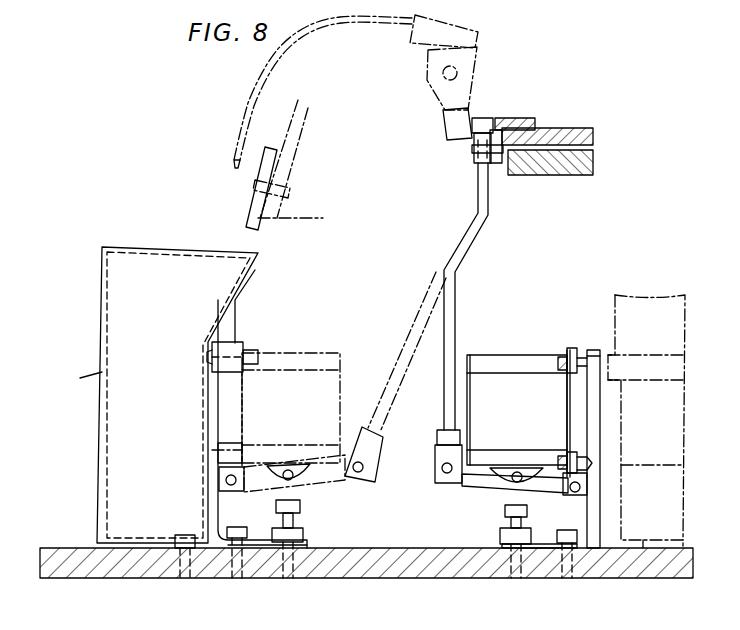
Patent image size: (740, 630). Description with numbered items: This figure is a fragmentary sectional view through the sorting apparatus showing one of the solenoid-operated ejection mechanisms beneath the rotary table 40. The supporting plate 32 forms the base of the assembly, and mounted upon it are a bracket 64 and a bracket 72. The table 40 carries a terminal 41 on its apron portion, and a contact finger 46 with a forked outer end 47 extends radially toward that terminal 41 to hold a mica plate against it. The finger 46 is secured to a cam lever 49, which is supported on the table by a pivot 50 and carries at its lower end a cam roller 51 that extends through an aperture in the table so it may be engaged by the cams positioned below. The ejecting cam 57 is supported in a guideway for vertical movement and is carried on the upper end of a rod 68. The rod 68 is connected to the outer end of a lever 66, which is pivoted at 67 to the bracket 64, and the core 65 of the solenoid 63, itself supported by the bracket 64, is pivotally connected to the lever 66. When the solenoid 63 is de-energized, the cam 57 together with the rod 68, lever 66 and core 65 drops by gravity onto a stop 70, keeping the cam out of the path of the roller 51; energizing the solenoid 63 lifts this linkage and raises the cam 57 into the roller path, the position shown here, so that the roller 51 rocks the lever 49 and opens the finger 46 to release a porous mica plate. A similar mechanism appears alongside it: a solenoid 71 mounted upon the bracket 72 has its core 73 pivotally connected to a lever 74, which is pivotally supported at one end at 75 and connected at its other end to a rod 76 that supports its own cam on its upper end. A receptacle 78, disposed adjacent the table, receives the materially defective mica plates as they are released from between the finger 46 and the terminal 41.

The supporting plate 32 is at (462, 580).
The table 40 is at (297, 139).
The terminals 41 is at (252, 190).
The contact fingers 46 is at (250, 81).
The forked outer ends 47 is at (235, 159).
The cam levers 49 is at (480, 40).
The pivots 50 is at (462, 73).
The cam rollers 51 is at (447, 128).
The cams 57 is at (478, 118).
The solenoid 63 is at (520, 380).
The bracket 64 is at (593, 503).
The core 65 is at (500, 482).
The lever 66 is at (472, 482).
The pivot 67 is at (580, 487).
The rod 68 is at (455, 305).
The stop 70 is at (505, 512).
The solenoid 71 is at (305, 352).
The bracket 72 is at (222, 512).
The core 73 is at (300, 483).
The lever 74 is at (260, 465).
The pivot 75 is at (220, 482).
The rod 76 is at (408, 358).
The receptacle 78 is at (105, 362).